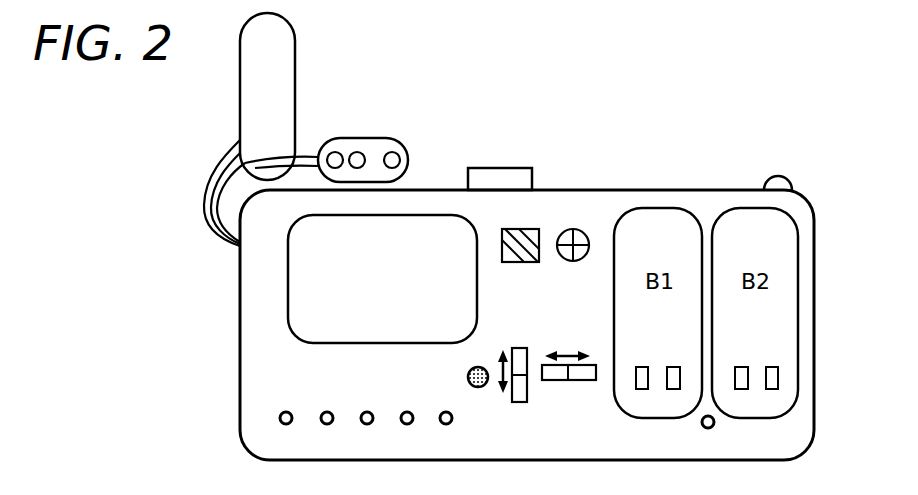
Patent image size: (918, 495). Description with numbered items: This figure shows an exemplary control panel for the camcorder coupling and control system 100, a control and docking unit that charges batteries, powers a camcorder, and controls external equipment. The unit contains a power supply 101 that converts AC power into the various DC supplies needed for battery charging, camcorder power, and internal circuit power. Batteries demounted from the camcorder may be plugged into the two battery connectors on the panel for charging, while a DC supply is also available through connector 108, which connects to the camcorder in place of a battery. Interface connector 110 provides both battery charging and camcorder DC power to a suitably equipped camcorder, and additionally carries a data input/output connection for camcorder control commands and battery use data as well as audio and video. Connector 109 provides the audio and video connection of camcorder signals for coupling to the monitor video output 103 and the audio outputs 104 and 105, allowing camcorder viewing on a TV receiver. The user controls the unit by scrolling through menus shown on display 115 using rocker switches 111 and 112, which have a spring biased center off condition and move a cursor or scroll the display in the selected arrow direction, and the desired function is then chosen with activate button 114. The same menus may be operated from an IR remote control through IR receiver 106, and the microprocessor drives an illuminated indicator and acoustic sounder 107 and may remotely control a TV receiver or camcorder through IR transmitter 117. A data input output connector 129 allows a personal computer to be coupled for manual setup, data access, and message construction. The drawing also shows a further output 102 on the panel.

The control and docking unit 100 is at (633, 117).
The power supply 101 is at (286, 434).
The indicator light 102 is at (327, 434).
The monitor video output 103 is at (367, 434).
The audio output 104 is at (407, 434).
The audio output 105 is at (447, 434).
The IR receiver 106 is at (520, 265).
The illuminated indicator and acoustic sounder 107 is at (576, 266).
The connector 108 is at (267, 96).
The connector 109 is at (410, 163).
The interface connector 110 is at (533, 170).
The rocker switch 111 is at (515, 390).
The rocker switch 112 is at (569, 392).
The activate button 114 is at (460, 376).
The display 115 is at (382, 279).
The IR transmitter 117 is at (763, 181).
The data input output connector 129 is at (708, 438).